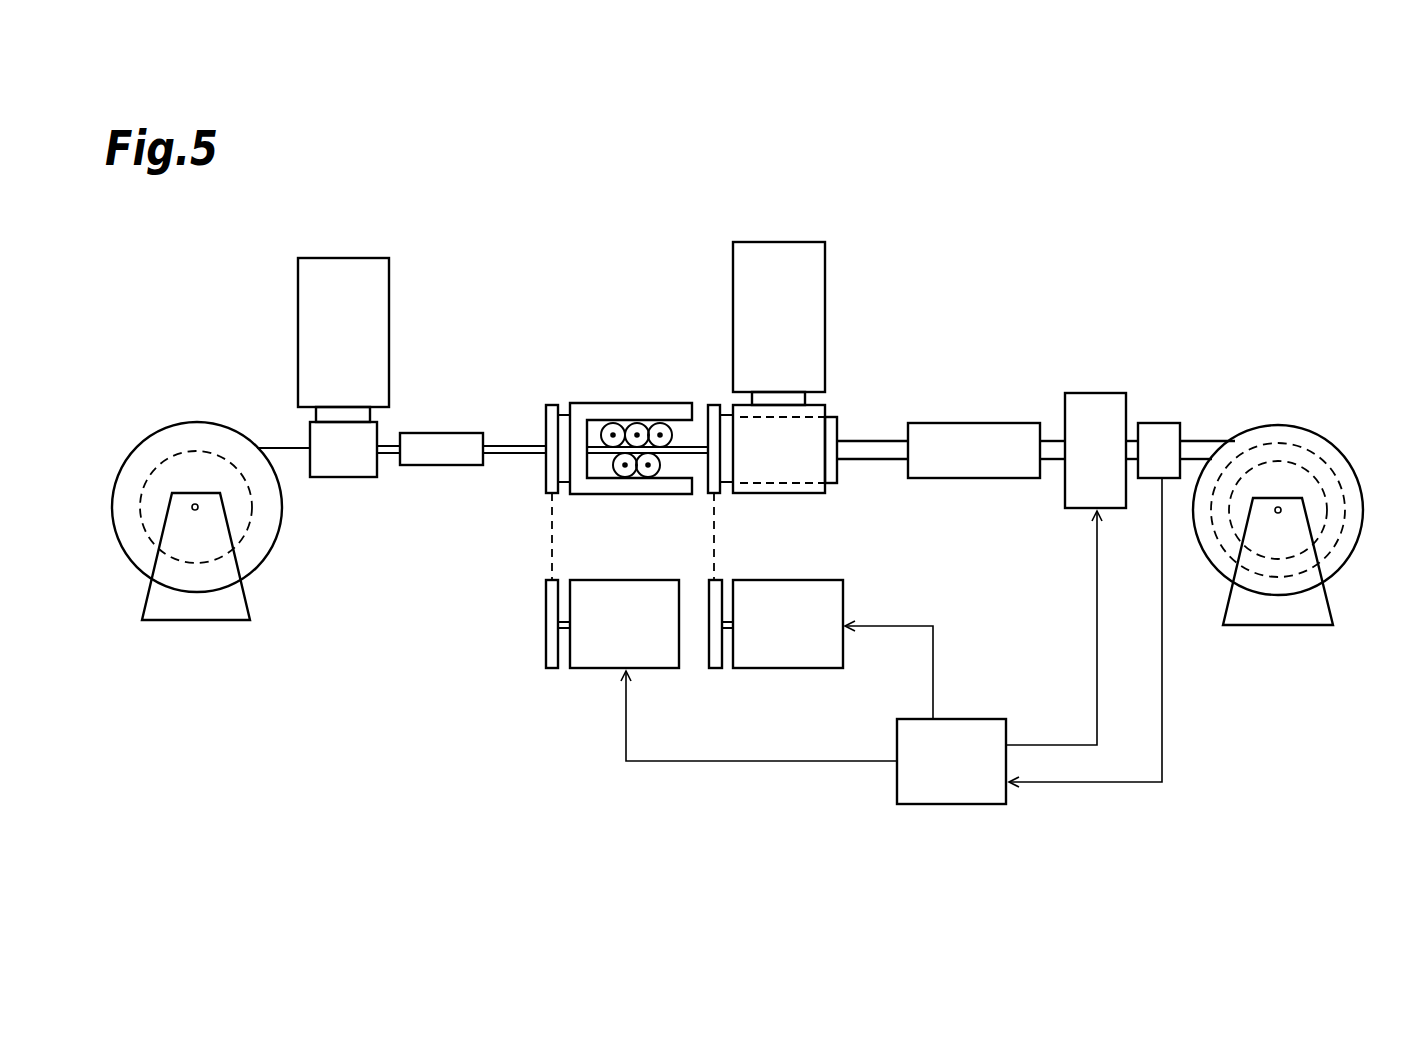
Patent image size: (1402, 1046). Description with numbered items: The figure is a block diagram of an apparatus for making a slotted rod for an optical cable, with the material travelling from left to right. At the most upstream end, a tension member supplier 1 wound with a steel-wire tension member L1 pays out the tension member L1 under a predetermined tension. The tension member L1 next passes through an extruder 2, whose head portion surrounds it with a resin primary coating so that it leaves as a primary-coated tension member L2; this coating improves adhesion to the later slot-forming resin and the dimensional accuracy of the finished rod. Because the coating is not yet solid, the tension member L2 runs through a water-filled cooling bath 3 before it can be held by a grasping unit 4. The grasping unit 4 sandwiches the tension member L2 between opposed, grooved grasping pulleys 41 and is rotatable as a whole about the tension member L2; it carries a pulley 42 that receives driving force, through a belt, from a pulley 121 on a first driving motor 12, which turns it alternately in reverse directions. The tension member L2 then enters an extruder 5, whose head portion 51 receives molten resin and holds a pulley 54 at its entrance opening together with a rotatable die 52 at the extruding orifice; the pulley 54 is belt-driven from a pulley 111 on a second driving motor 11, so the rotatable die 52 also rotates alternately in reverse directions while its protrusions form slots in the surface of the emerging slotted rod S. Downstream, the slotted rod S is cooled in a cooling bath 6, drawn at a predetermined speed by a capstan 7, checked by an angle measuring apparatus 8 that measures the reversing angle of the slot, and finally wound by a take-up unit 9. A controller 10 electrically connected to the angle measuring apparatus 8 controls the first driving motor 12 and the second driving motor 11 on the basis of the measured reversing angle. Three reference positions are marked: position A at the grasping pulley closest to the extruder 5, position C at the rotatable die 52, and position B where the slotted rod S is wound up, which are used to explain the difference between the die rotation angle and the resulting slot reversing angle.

The tension member supplier 1 is at (260, 542).
The extruder 2 is at (385, 277).
The cooling bath 3 is at (440, 465).
The grasping unit 4 is at (598, 405).
The grasping pulleys 41 is at (648, 466).
The pulley 42 is at (550, 403).
The extruder 5 is at (825, 262).
The head portion 51 is at (762, 473).
The rotatable die 52 is at (832, 417).
The pulley 54 is at (717, 403).
The cooling bath 6 is at (978, 423).
The capstan 7 is at (1093, 393).
The angle measuring apparatus 8 is at (1157, 423).
The take-up unit 9 is at (1320, 445).
The controller 10 is at (1005, 792).
The second driving motor 11 is at (820, 673).
The pulley 111 is at (713, 673).
The first driving motor 12 is at (600, 665).
The pulley 121 is at (547, 670).
The tension member L1 is at (285, 448).
The tension member L2 is at (503, 442).
The position A is at (661, 434).
The position B is at (1278, 440).
The position C is at (837, 494).
The slotted rod S is at (878, 441).